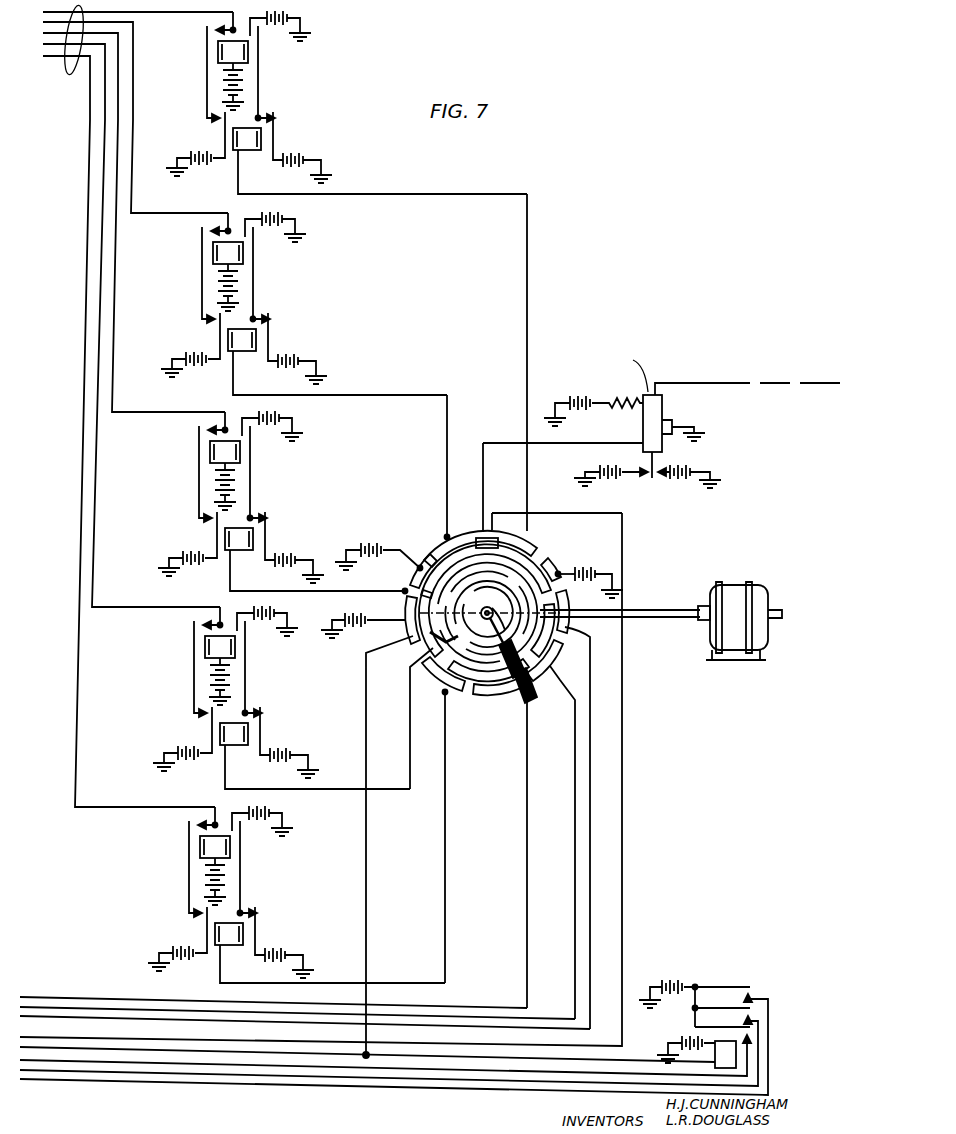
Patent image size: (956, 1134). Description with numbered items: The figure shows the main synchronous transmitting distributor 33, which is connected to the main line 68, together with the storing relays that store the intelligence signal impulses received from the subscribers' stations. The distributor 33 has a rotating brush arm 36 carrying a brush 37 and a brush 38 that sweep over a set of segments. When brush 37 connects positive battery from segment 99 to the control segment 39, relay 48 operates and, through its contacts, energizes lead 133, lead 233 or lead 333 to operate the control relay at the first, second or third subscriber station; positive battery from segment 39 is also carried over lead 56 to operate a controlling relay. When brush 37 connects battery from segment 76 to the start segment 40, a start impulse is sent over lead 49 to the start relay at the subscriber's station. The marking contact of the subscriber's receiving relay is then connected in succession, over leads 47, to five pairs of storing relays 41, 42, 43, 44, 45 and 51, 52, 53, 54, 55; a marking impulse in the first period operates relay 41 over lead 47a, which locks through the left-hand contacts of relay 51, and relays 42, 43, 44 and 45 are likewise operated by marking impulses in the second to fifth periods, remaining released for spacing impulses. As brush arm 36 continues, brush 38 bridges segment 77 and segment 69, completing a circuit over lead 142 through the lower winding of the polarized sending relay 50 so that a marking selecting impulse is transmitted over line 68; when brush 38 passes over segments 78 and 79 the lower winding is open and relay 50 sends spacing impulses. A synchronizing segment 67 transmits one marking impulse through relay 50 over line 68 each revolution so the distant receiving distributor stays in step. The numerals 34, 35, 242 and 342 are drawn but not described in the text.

The main transmitting distributor 33 is at (553, 565).
The motor 34 is at (735, 590).
The motor shaft 35 is at (642, 606).
The brush arm 36 is at (440, 632).
The brush 37 is at (470, 690).
The brush 38 is at (500, 680).
The control segment 39 is at (447, 680).
The start segment 40 is at (445, 556).
The storing relay 41 is at (259, 66).
The storing relay 42 is at (254, 267).
The storing relay 43 is at (251, 466).
The storing relay 44 is at (246, 661).
The storing relay 45 is at (241, 861).
The leads 47 is at (70, 72).
The lead 47a is at (154, 16).
The relay 48 is at (737, 1050).
The lead 49 is at (58, 1036).
The sending relay 50 is at (663, 410).
The storing relay 51 is at (346, 153).
The storing relay 52 is at (304, 354).
The storing relay 53 is at (280, 551).
The storing relay 54 is at (281, 748).
The storing relay 55 is at (296, 945).
The lead 56 is at (115, 1045).
The synchronizing segment 67 is at (568, 602).
The main line 68 is at (728, 380).
The segment 69 is at (445, 655).
The segment 76 is at (440, 592).
The segment 77 is at (520, 705).
The segment 78 is at (556, 664).
The segment 79 is at (598, 632).
The segment 99 is at (400, 593).
The lead 133 is at (173, 1080).
The lead 142 is at (42, 997).
The lead 233 is at (127, 1071).
The conductor 242 is at (96, 1006).
The lead 333 is at (77, 1061).
The conductor 342 is at (152, 1016).